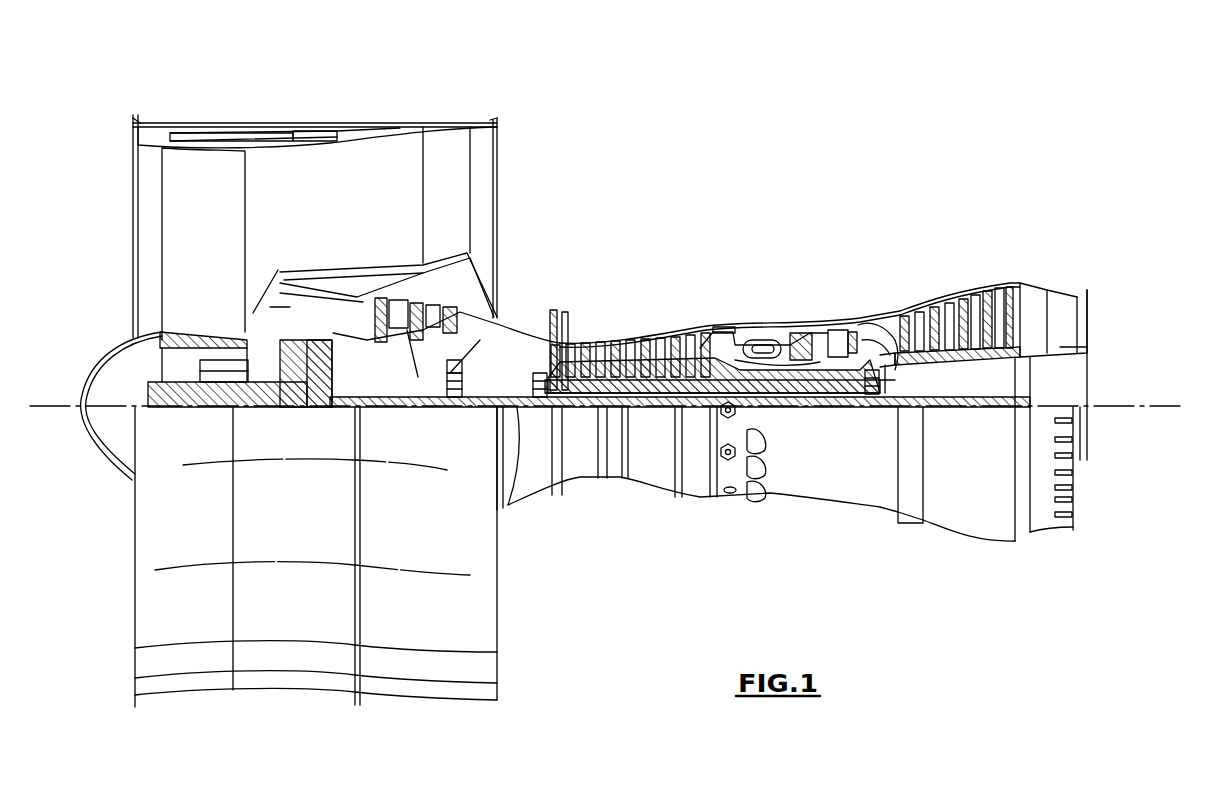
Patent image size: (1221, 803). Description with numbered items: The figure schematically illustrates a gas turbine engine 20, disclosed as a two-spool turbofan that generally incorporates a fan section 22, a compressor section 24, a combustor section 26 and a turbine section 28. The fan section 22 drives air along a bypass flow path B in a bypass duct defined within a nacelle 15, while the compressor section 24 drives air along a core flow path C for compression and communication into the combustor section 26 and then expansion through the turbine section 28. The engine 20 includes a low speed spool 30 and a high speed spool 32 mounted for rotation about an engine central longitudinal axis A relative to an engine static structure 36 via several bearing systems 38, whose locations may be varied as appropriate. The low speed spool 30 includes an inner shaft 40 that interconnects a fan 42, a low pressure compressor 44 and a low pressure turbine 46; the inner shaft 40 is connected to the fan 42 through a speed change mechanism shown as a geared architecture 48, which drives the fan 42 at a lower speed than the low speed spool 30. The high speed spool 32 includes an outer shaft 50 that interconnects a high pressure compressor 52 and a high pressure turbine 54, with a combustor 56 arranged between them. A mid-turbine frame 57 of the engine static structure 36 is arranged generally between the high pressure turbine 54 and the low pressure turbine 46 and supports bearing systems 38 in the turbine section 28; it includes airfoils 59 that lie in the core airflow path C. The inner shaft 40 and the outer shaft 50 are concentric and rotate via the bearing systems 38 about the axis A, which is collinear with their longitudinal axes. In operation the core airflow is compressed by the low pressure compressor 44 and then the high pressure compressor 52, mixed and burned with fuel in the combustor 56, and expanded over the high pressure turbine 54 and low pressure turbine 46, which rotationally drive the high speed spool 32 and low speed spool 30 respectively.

The gas turbine engine 20 is at (773, 176).
The fan section 22 is at (245, 114).
The nacelle 15 is at (315, 127).
The fan 42 is at (203, 244).
The bypass flow path B is at (280, 197).
The core flow path C is at (320, 305).
The low pressure compressor 44 is at (420, 317).
The compressor section 24 is at (546, 314).
The high pressure compressor 52 is at (620, 345).
The combustor section 26 is at (770, 304).
The high speed spool 32 is at (700, 348).
The combustor 56 is at (768, 350).
The high pressure turbine 54 is at (835, 328).
The mid-turbine frame 57 is at (878, 318).
The turbine section 28 is at (916, 266).
The low pressure turbine 46 is at (963, 300).
The airfoils 59 is at (900, 375).
The geared architecture 48 is at (320, 392).
The bearing systems 38 is at (455, 386).
The inner shaft 40 is at (518, 410).
The low speed spool 30 is at (655, 412).
The engine static structure 36 is at (695, 497).
The outer shaft 50 is at (780, 395).
The engine central longitudinal axis A is at (1160, 406).